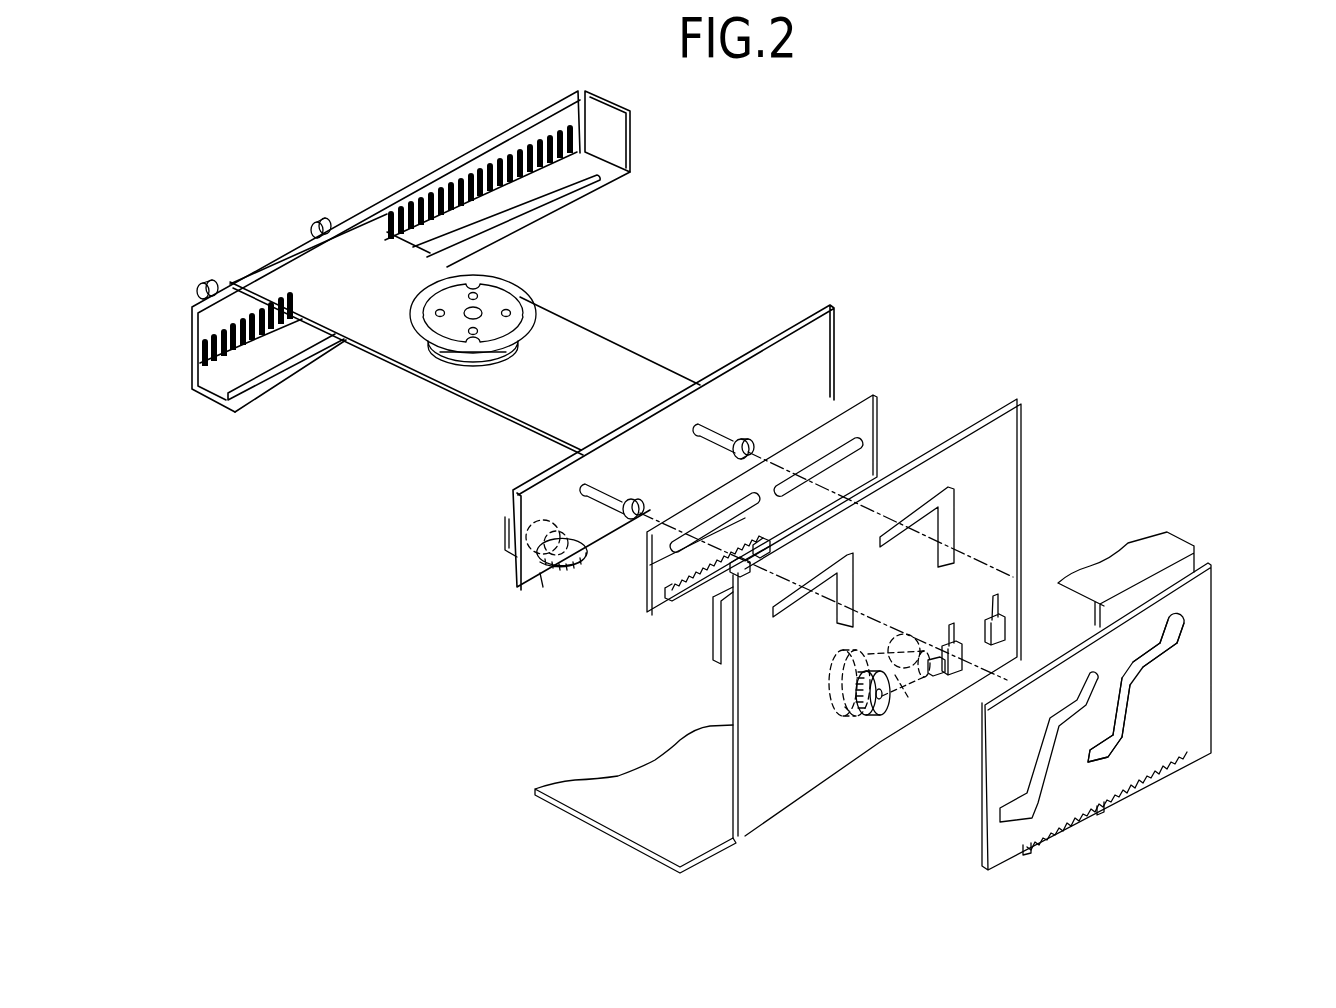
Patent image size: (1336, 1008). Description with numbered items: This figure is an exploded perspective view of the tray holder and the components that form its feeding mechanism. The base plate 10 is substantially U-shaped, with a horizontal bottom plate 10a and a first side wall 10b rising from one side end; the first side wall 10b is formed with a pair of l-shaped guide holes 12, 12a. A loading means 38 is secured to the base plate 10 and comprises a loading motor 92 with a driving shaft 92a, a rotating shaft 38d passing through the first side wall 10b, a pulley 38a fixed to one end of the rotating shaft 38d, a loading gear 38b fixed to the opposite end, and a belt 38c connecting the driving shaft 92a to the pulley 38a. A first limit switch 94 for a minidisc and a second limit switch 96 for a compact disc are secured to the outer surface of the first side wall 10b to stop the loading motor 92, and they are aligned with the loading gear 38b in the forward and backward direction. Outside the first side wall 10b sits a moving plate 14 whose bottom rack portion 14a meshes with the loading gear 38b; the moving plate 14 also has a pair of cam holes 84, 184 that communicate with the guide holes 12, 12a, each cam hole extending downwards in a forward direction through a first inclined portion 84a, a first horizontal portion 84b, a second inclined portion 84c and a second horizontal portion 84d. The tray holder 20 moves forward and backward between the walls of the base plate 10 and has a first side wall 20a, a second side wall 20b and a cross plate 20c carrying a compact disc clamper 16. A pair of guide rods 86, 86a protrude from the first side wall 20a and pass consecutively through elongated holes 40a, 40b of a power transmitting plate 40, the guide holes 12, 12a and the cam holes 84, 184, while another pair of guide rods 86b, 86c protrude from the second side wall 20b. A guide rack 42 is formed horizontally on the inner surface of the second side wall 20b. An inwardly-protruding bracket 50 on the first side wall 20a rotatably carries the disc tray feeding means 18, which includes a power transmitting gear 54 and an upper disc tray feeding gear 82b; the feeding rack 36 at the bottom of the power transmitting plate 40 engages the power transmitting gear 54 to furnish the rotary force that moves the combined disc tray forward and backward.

The base plate 10 is at (649, 730).
The bottom plate 10a is at (607, 820).
The first side wall 10b is at (745, 813).
The guide hole 12 is at (917, 617).
The guide hole 12a is at (950, 532).
The moving plate 14 is at (1152, 729).
The rack portion 14a is at (1093, 813).
The compact disc clamper 16 is at (538, 298).
The disc tray feeding means 18 is at (546, 584).
The tray holder 20 is at (549, 323).
The first side wall 20a is at (825, 368).
The second side wall 20b is at (417, 234).
The cross plate 20c is at (603, 355).
The feeding rack 36 is at (685, 603).
The loading means 38 is at (853, 760).
The pulley 38a is at (845, 707).
The loading gear 38b is at (880, 715).
The belt 38c is at (908, 697).
The rotating shaft 38d is at (842, 673).
The power transmitting plate 40 is at (799, 513).
The elongated hole 40a is at (852, 452).
The elongated hole 40b is at (673, 552).
The guide rack 42 is at (560, 158).
The bracket 50 is at (505, 548).
The power transmitting gear 54 is at (570, 573).
The upper disc tray feeding gear 82b is at (525, 522).
The cam hole 84 is at (1161, 732).
The first inclined portion 84a is at (1180, 647).
The first horizontal portion 84b is at (1183, 652).
The second inclined portion 84c is at (1140, 710).
The second horizontal portion 84d is at (1117, 750).
The guide rod 86 is at (734, 432).
The guide rod 86a is at (587, 490).
The guide rod 86b is at (320, 222).
The guide rod 86c is at (197, 290).
The loading motor 92 is at (904, 634).
The driving shaft 92a is at (929, 672).
The first limit switch 94 is at (956, 672).
The second limit switch 96 is at (997, 597).
The cam hole 184 is at (1042, 777).